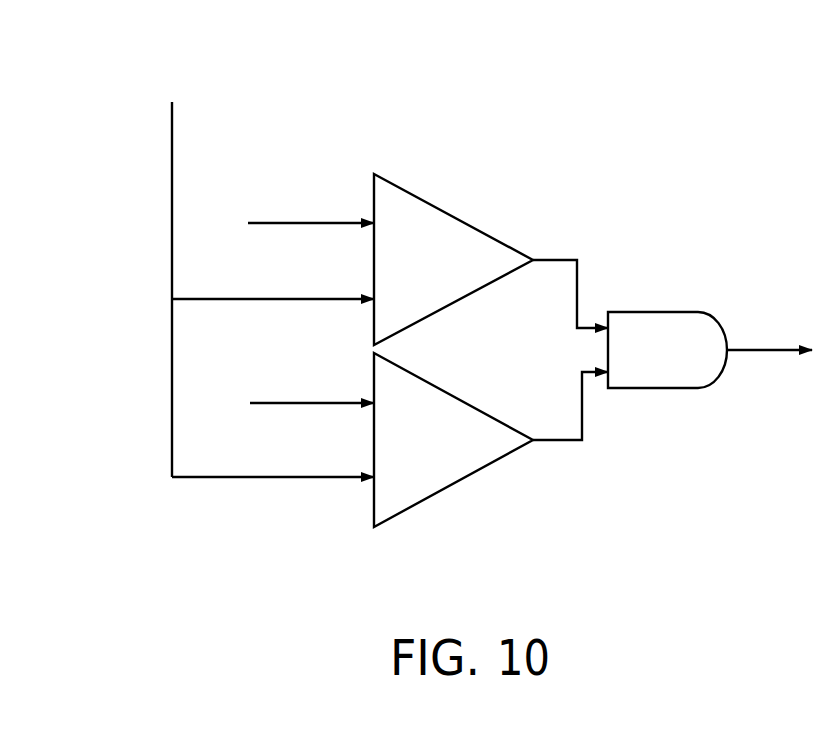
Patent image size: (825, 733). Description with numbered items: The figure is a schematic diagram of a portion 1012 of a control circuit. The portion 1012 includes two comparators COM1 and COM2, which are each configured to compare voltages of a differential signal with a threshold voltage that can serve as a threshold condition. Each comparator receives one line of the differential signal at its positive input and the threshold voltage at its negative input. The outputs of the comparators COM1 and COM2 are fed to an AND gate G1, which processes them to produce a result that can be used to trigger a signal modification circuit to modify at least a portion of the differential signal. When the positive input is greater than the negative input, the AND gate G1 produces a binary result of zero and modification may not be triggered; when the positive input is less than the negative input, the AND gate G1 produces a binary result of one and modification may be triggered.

The portion of a control circuit 1012 is at (469, 283).
The comparator COM1 is at (453, 259).
The comparator COM2 is at (453, 440).
The AND gate G1 is at (667, 350).